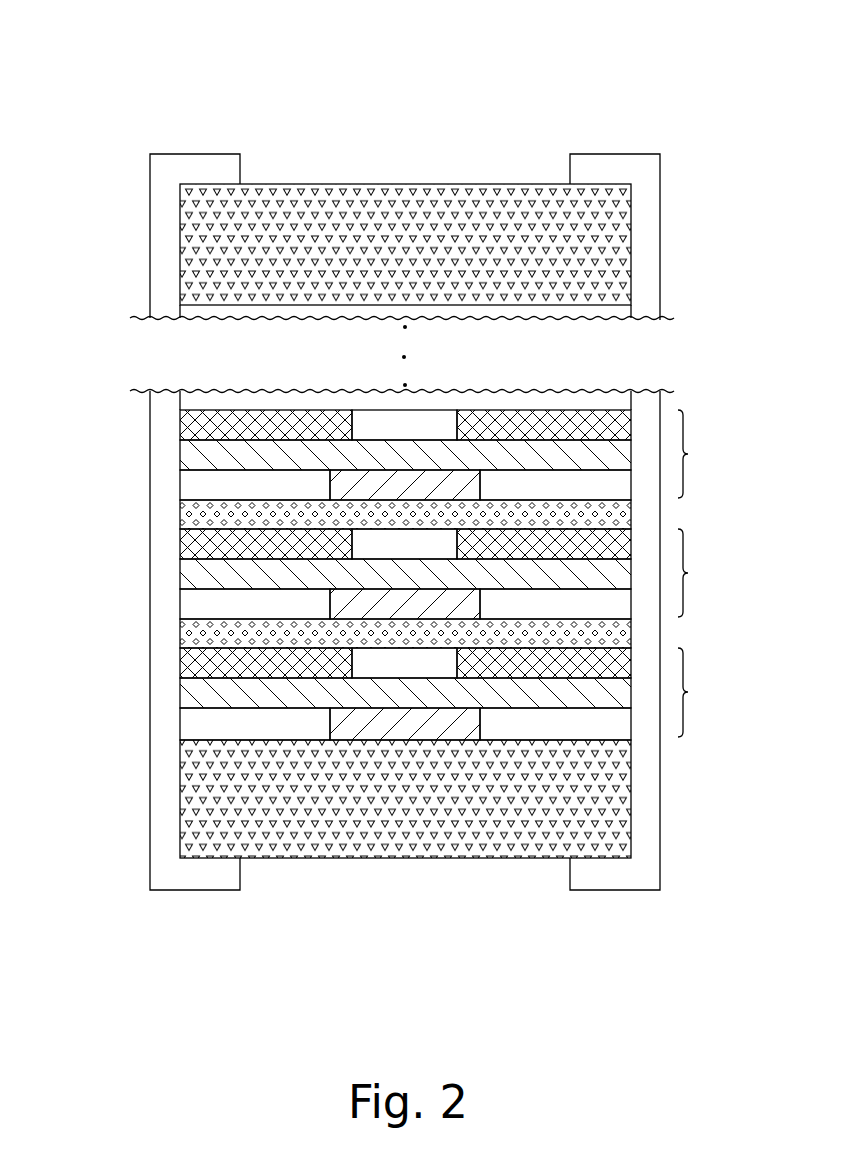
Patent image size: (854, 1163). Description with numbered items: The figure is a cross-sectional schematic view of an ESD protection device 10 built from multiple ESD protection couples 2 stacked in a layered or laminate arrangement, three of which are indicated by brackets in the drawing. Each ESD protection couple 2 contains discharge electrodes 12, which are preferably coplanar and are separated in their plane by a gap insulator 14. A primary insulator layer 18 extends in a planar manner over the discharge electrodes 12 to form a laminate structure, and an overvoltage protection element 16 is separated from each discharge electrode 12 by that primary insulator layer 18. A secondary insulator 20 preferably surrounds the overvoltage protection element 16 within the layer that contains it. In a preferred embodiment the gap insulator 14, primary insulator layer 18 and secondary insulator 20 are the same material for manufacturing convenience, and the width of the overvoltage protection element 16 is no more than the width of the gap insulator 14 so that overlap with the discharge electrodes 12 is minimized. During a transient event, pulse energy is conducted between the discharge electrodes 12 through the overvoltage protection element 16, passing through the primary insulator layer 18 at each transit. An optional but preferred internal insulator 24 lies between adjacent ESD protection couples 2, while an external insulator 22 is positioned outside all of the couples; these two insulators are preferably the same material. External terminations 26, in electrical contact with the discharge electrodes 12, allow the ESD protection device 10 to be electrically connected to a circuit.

The ESD protection couple 2 is at (691, 573).
The ESD protection device 10 is at (456, 126).
The discharge electrodes 12 is at (237, 722).
The gap insulator 14 is at (360, 727).
The overvoltage protection element 16 is at (443, 670).
The primary insulator layer 18 is at (203, 696).
The secondary insulator 20 is at (338, 663).
The external insulator 22 is at (332, 205).
The internal insulator 24 is at (190, 632).
The external terminations 26 is at (197, 873).